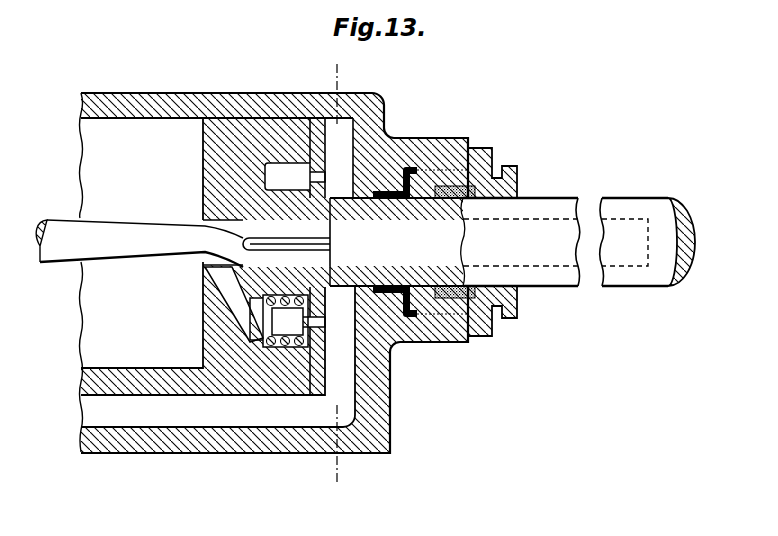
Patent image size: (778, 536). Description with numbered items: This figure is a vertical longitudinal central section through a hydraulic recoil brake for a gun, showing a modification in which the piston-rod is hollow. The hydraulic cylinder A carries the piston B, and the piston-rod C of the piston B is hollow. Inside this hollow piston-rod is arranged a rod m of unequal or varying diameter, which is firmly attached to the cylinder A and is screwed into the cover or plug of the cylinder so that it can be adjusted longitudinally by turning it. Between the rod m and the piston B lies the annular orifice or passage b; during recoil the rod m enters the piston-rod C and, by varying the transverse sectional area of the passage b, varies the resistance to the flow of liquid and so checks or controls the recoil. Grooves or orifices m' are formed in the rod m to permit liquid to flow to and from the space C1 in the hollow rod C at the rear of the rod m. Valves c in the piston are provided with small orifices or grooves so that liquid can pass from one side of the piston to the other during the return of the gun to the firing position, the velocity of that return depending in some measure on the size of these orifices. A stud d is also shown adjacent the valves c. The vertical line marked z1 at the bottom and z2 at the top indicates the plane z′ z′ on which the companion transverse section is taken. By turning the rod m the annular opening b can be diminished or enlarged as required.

The hydraulic cylinder A is at (274, 273).
The piston B is at (266, 229).
The annular orifice or passage b is at (205, 224).
The rod m is at (139, 243).
The grooves or orifices m' is at (305, 243).
The space C1 is at (397, 242).
The piston-rod C is at (579, 242).
The valves c is at (449, 283).
The stud d is at (326, 300).
The section line z1 is at (334, 456).
The section line z2 is at (334, 83).